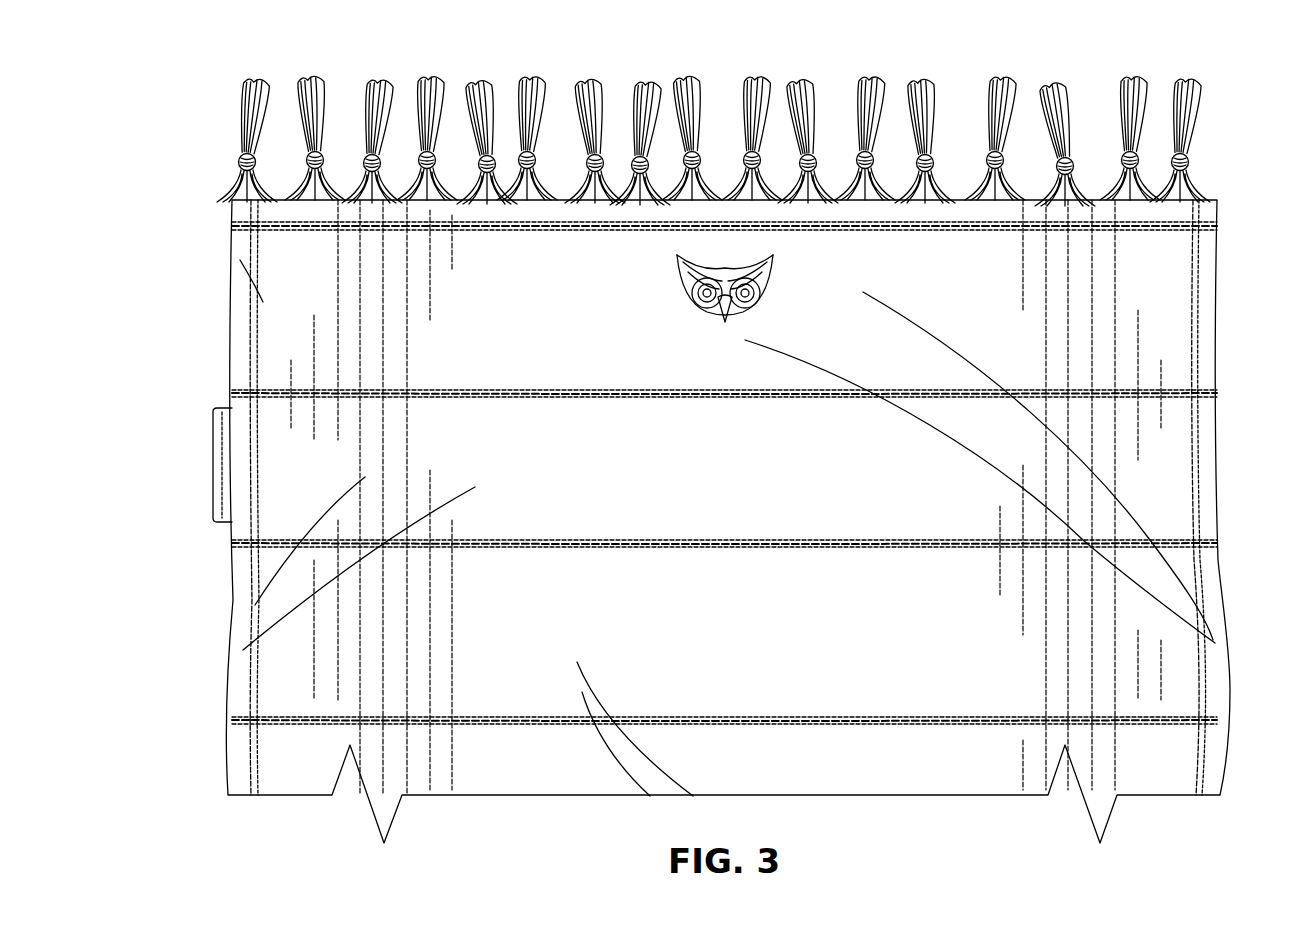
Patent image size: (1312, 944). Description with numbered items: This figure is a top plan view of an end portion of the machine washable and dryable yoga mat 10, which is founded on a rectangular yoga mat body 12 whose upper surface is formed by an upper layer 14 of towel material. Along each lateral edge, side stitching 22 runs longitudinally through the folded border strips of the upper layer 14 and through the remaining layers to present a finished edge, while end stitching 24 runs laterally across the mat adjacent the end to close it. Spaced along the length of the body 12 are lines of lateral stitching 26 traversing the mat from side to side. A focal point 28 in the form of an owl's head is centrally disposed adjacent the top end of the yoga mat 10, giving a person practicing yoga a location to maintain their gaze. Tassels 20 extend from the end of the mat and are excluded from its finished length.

The machine washable and dryable yoga mat 10 is at (180, 297).
The yoga mat body 12 is at (232, 633).
The upper layer 14 is at (1168, 337).
The tassels 20 is at (1066, 92).
The side stitching 22 is at (1197, 588).
The end stitching 24 is at (1175, 224).
The lateral stitching 26 is at (268, 543).
The focal point 28 is at (724, 268).